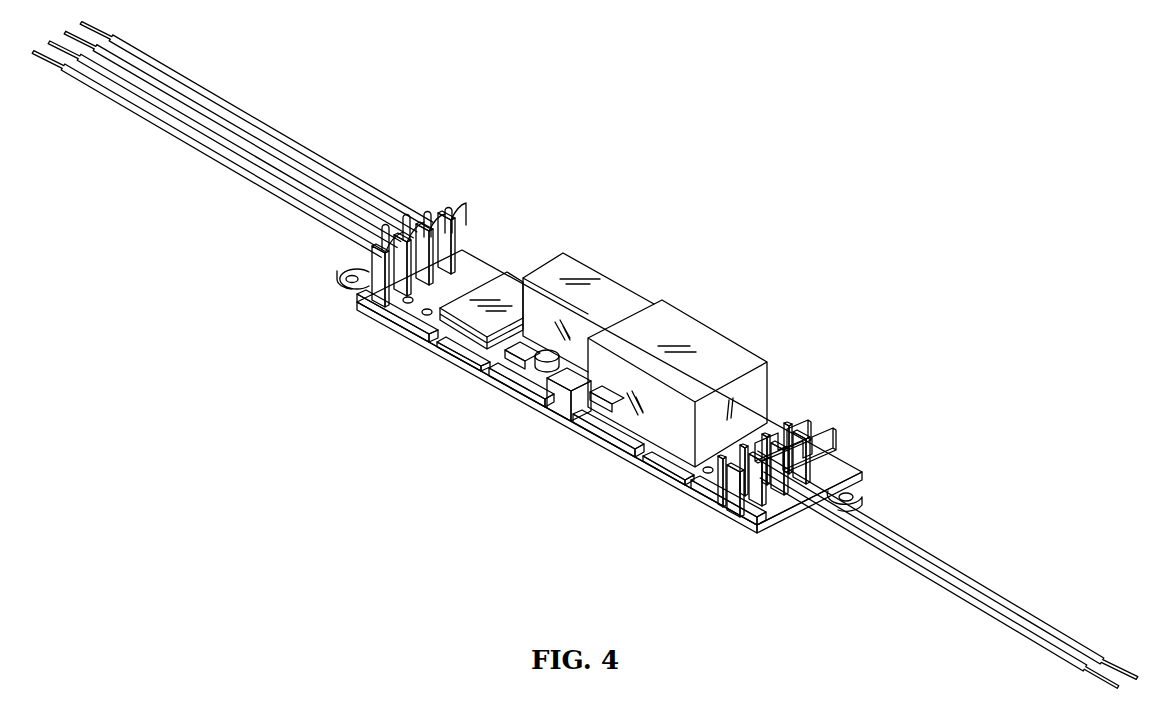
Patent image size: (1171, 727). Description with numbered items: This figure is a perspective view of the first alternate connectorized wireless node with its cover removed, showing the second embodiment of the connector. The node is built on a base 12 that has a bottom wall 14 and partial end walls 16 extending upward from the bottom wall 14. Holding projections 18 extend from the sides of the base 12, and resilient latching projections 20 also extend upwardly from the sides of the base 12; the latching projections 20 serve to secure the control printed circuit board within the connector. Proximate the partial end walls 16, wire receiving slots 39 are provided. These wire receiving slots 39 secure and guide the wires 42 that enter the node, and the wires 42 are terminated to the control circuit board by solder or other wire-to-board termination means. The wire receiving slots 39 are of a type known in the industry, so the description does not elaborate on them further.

The base 12 is at (585, 355).
The bottom wall 14 is at (590, 430).
The partial end walls 16 is at (357, 290).
The holding projections 18 is at (455, 352).
The resilient latching projections 20 is at (553, 410).
The wire receiving slots 39 is at (463, 224).
The wires 42 is at (336, 166).